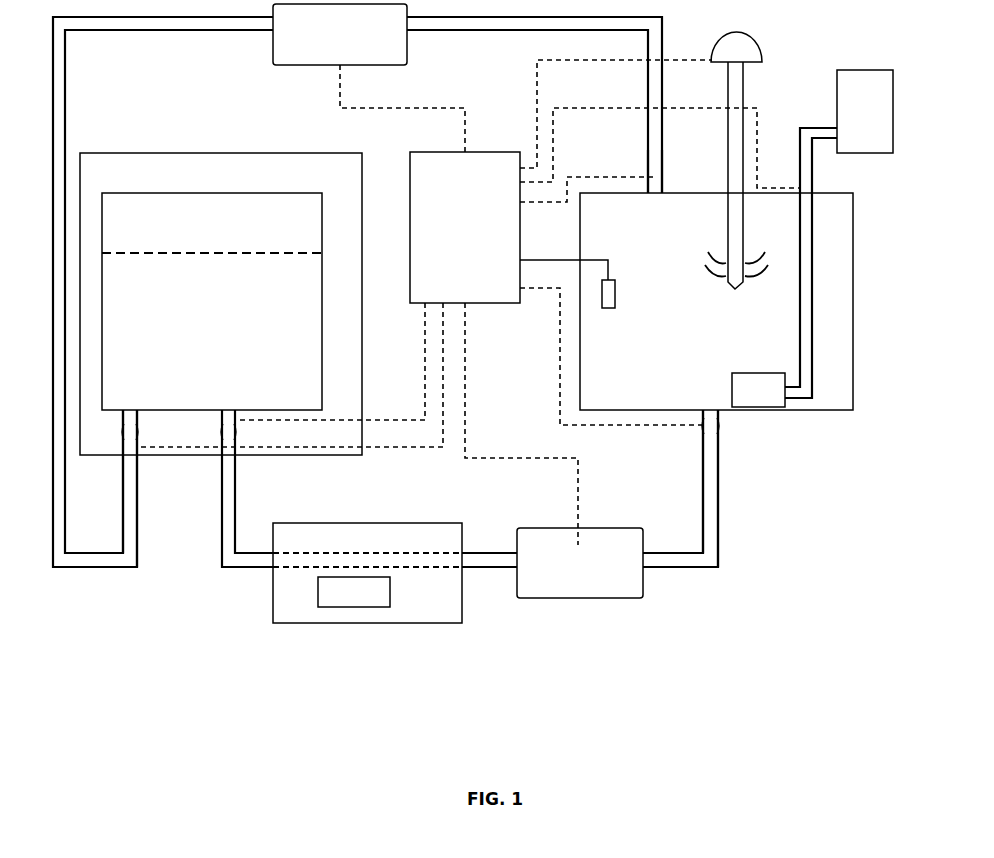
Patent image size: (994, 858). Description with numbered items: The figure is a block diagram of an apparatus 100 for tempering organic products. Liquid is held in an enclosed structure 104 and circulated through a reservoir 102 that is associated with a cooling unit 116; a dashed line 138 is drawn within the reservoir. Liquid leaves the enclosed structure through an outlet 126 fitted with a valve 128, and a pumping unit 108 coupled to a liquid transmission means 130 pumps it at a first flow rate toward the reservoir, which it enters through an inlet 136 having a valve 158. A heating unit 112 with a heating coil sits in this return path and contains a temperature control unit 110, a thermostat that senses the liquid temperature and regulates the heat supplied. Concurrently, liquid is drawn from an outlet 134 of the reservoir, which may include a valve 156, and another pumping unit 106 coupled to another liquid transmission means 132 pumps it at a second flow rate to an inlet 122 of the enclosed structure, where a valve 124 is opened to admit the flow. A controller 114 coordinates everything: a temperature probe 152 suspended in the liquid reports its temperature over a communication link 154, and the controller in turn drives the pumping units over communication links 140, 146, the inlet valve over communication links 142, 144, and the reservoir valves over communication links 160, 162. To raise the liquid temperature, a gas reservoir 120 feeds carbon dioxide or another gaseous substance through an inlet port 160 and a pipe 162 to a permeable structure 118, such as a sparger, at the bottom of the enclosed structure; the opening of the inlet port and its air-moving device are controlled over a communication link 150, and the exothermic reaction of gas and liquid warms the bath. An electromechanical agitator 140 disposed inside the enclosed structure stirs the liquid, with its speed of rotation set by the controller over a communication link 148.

The apparatus 100 is at (447, 639).
The reservoir 102 is at (244, 196).
The enclosed structure 104 is at (822, 400).
The pumping unit 106 is at (340, 34).
The pumping unit 108 is at (580, 563).
The temperature control unit 110 is at (354, 592).
The heating unit 112 is at (360, 523).
The controller 114 is at (465, 227).
The cooling unit 116 is at (233, 165).
The permeable structure 118 is at (756, 362).
The gas reservoir 120 is at (865, 111).
The inlet 122 is at (655, 198).
The valve 124 is at (657, 176).
The outlet 126 is at (714, 407).
The valve 128 is at (718, 420).
The liquid transmission means 130 is at (718, 505).
The liquid transmission means 132 is at (107, 567).
The outlet 134 is at (130, 405).
The inlet 136 is at (225, 405).
The liquid level 138 is at (208, 262).
The agitator 140 is at (752, 50).
The communication link 142 is at (590, 178).
The communication link 144 is at (657, 425).
The communication link 146 is at (547, 457).
The communication link 148 is at (583, 62).
The communication link 150 is at (580, 110).
The temperature probe 152 is at (615, 288).
The communication link 154 is at (535, 262).
The valve 156 is at (128, 418).
The valve 158 is at (228, 418).
The inlet port 160 is at (806, 190).
The pipe 162 is at (812, 250).